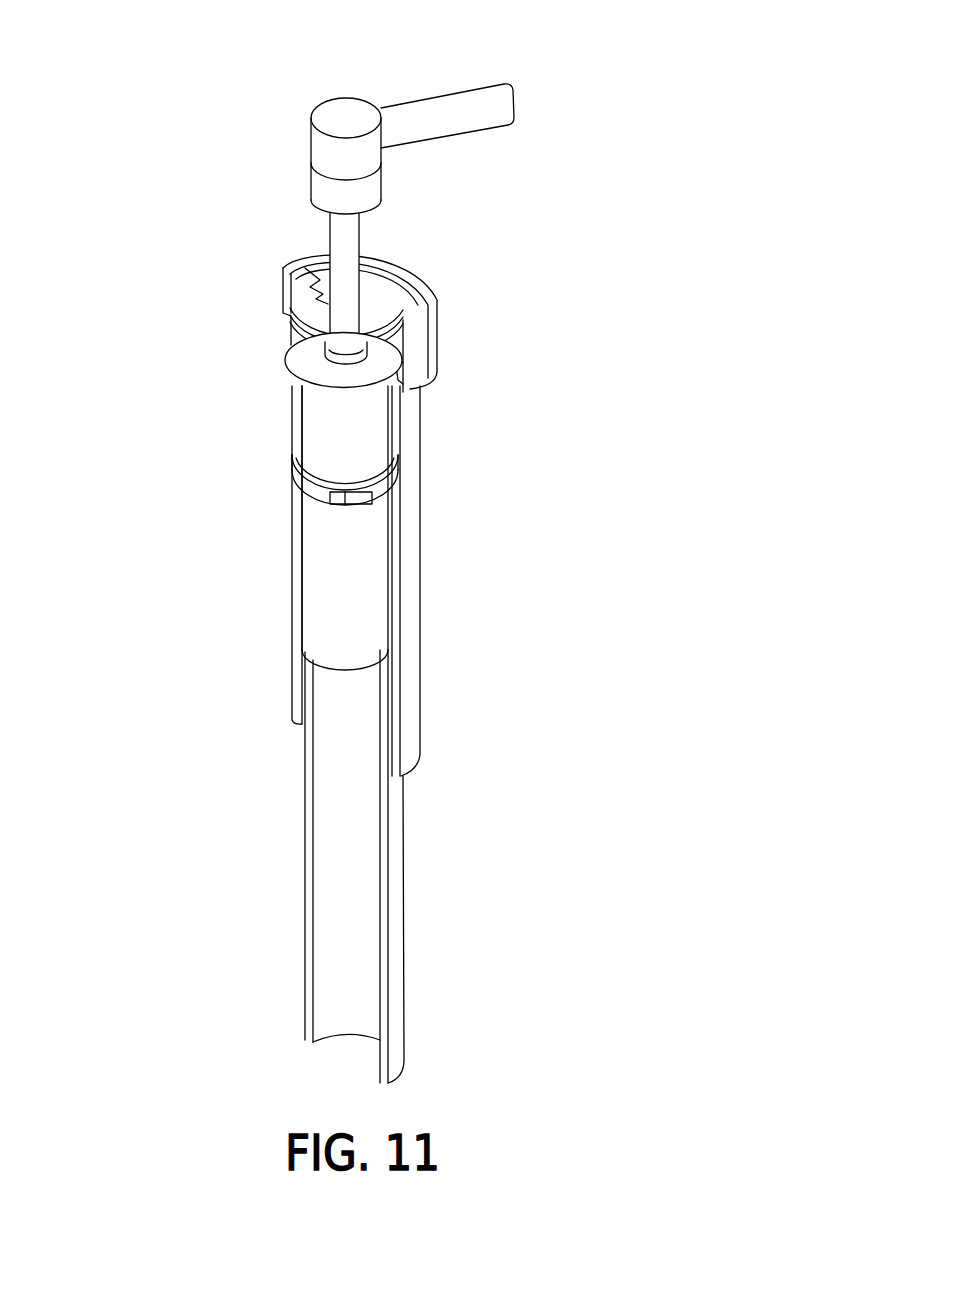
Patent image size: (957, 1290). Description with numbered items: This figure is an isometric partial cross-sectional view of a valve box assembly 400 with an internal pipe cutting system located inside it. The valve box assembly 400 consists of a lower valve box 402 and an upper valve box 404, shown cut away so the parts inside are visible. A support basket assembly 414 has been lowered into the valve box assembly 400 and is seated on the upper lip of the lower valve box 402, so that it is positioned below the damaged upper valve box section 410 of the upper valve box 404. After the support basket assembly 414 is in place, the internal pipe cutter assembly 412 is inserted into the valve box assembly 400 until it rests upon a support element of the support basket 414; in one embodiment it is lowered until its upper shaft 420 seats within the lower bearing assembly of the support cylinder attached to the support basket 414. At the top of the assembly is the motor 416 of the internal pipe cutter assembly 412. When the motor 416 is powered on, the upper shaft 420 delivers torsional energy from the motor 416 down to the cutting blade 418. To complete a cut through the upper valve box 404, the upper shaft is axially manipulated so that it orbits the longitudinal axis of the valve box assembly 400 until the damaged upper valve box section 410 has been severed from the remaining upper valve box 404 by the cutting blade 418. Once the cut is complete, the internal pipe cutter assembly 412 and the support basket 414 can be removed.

The valve box assembly 400 is at (436, 545).
The lower valve box 402 is at (400, 953).
The upper valve box 404 is at (420, 573).
The damaged upper valve box section 410 is at (285, 292).
The internal pipe cutter assembly 412 is at (380, 222).
The support basket assembly 414 is at (337, 545).
The motor 416 is at (336, 117).
The cutting blade 418 is at (300, 366).
The upper shaft 420 is at (345, 293).